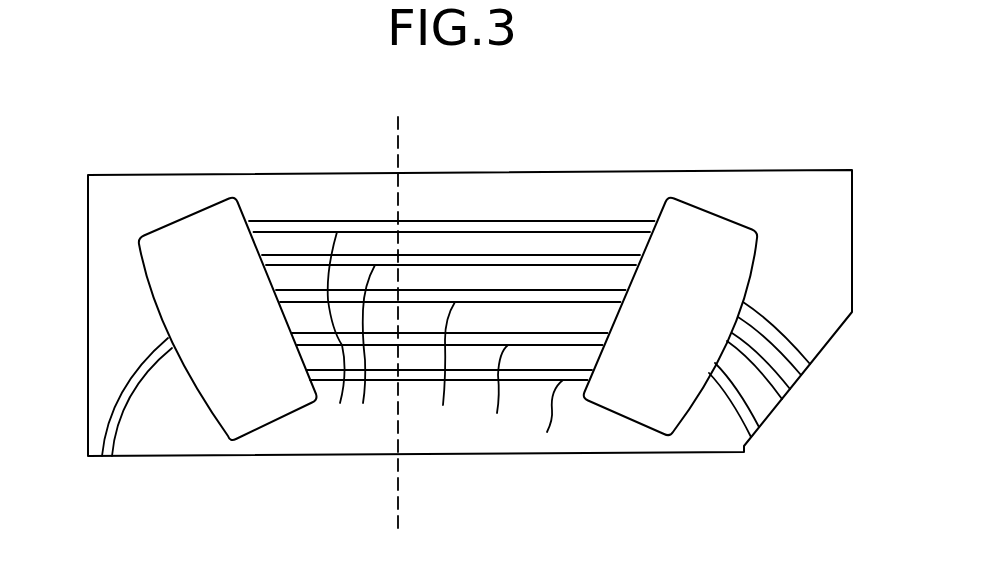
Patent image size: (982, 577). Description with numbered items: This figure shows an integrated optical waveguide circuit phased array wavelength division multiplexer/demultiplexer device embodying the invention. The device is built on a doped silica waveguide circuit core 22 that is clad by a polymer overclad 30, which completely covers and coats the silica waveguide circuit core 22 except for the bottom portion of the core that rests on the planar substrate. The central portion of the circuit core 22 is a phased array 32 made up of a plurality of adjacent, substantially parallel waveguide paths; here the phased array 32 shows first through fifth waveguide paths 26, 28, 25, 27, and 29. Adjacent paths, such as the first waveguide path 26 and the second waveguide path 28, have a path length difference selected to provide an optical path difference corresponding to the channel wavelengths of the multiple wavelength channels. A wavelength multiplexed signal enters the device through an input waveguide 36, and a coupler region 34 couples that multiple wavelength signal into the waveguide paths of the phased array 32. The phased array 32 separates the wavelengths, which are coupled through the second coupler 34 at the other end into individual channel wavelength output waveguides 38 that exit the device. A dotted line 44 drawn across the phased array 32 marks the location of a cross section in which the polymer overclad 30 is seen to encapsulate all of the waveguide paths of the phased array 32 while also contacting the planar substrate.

The silica waveguide circuit core 22 is at (247, 193).
The third waveguide path 25 is at (433, 365).
The first waveguide path 26 is at (541, 416).
The fourth waveguide path 27 is at (363, 350).
The second waveguide path 28 is at (487, 393).
The fifth waveguide path 29 is at (340, 403).
The polymer overclad 30 is at (124, 217).
The phased array 32 is at (558, 202).
The coupler region 34 is at (209, 318).
The input waveguide 36 is at (108, 460).
The output waveguides 38 is at (793, 413).
The dotted line 44 is at (397, 319).